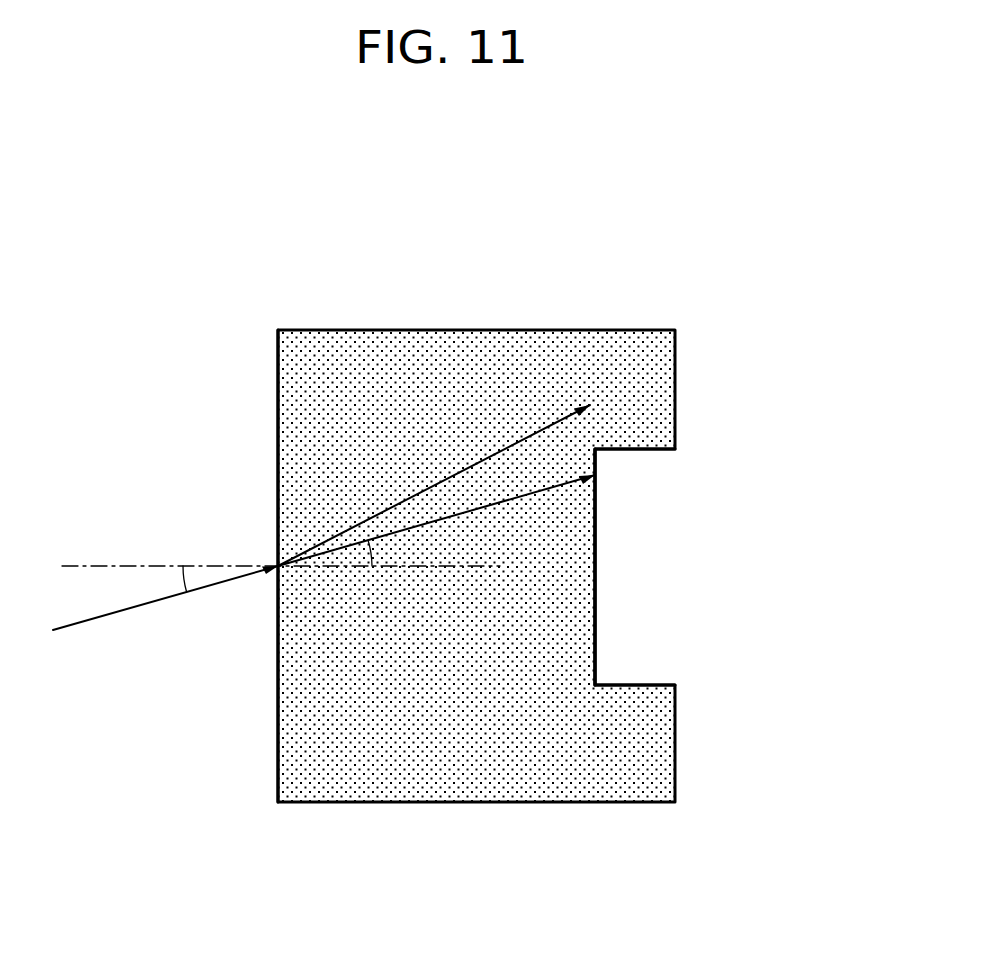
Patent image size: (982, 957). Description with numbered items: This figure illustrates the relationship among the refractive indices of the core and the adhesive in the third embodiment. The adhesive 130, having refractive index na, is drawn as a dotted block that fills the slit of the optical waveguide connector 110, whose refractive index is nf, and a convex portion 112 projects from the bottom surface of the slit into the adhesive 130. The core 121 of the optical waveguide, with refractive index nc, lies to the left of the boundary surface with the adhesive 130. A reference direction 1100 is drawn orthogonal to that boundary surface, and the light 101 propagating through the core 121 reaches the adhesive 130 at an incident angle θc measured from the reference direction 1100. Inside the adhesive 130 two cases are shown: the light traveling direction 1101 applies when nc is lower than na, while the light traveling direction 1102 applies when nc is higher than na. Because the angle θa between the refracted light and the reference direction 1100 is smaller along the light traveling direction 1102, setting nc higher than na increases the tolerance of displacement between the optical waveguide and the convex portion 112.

The adhesive 130 is at (386, 362).
The optical waveguide connector 110 is at (713, 428).
The convex portion 112 is at (595, 551).
The core 121 is at (165, 480).
The reference direction 1100 is at (110, 566).
The light 101 is at (130, 610).
The light traveling direction 1101 is at (521, 440).
The light traveling direction 1102 is at (538, 492).